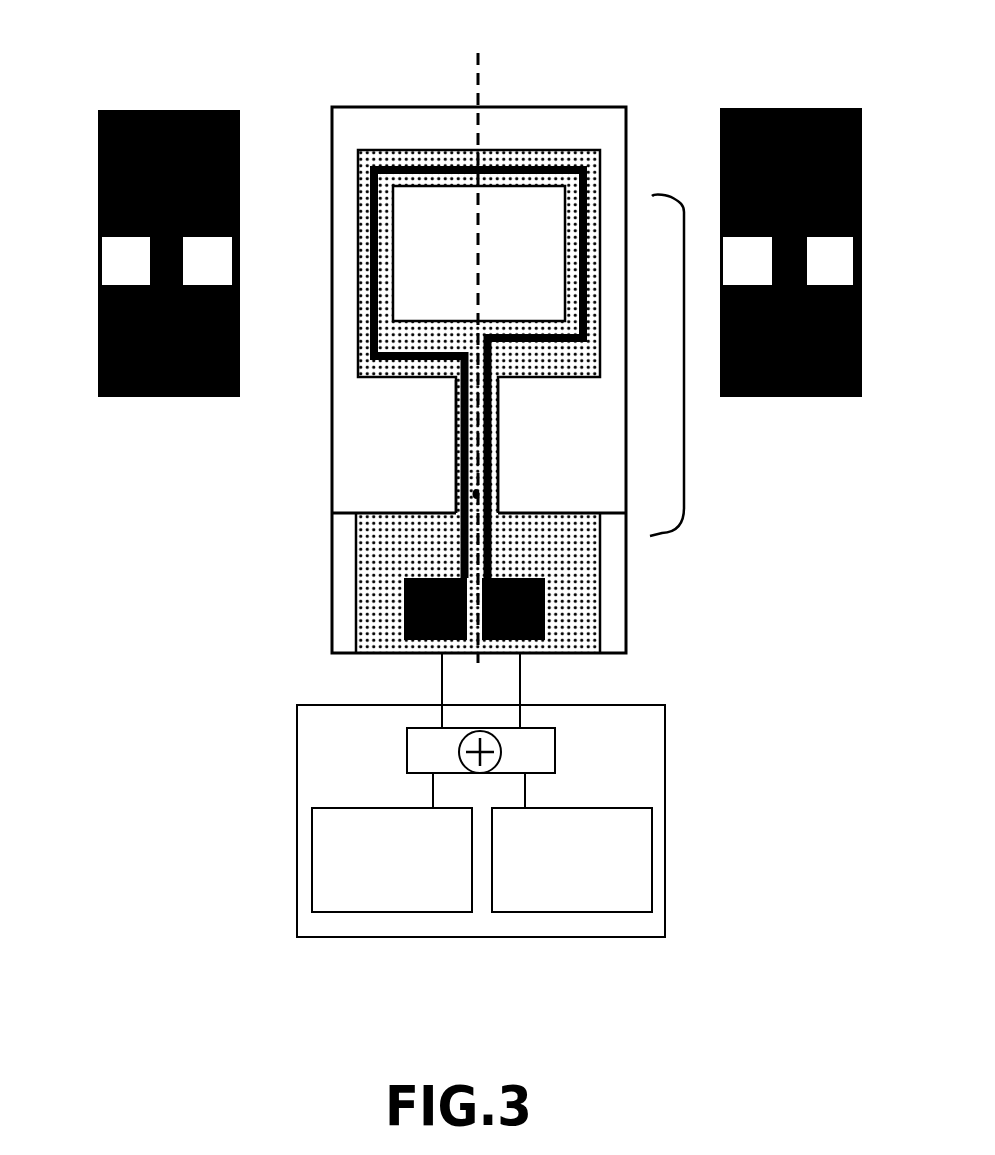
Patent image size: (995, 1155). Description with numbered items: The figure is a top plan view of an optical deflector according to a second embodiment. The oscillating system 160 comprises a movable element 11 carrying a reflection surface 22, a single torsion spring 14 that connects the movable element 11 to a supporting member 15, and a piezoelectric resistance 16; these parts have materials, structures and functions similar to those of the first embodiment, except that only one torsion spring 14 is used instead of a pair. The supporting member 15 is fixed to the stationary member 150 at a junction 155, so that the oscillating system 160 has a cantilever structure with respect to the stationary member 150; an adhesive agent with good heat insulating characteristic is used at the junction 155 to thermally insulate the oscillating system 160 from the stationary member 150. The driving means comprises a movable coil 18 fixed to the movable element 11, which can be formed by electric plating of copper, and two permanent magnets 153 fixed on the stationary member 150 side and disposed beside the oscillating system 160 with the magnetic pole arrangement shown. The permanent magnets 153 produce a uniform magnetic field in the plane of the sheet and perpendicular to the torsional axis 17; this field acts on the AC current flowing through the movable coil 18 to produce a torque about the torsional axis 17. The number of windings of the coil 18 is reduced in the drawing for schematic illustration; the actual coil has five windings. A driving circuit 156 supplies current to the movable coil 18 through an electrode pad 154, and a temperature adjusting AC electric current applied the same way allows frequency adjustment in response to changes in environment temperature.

The permanent magnet 153 is at (133, 108).
The stationary member 150 is at (362, 466).
The supporting member 15 is at (555, 543).
The reflection surface 22 is at (590, 312).
The movable element 11 is at (497, 250).
The movable coil 18 is at (598, 213).
The torsion spring 14 is at (497, 420).
The electrode pad 154 is at (405, 604).
The junction 155 is at (600, 593).
The torsional axis 17 is at (483, 338).
The piezoelectric resistance 16 is at (474, 493).
The oscillating system 160 is at (684, 511).
The driving circuit 156 is at (481, 840).